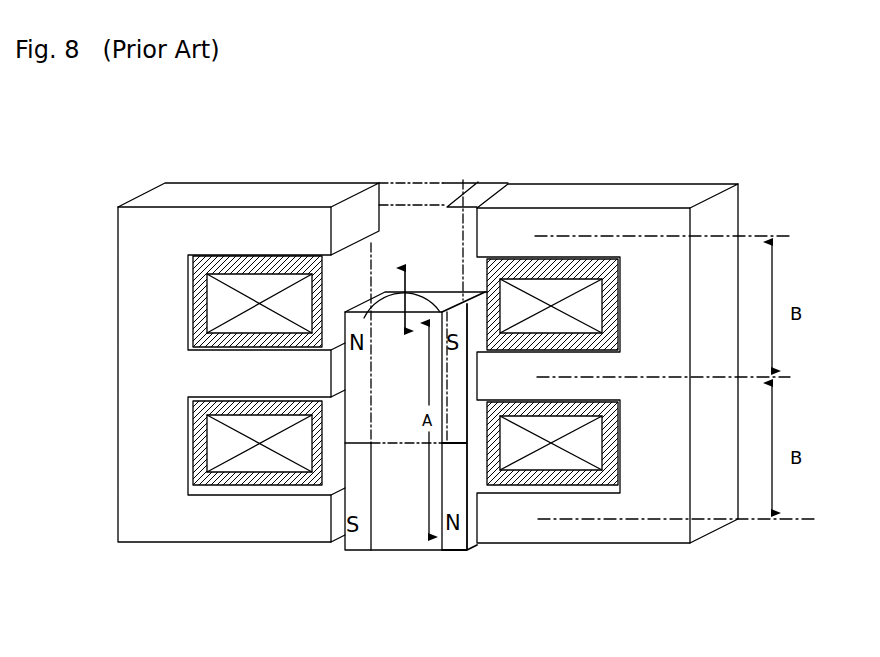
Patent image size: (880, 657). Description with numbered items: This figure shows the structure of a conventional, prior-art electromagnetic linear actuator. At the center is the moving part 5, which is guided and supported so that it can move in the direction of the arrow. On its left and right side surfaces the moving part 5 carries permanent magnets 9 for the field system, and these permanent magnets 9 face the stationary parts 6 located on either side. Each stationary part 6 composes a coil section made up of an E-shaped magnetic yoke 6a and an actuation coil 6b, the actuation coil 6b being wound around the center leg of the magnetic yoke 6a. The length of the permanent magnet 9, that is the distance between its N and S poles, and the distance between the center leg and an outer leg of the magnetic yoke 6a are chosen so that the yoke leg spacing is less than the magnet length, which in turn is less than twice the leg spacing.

The stationary part 6 is at (399, 330).
The E-shaped magnetic yoke 6a is at (153, 254).
The actuation coil 6b is at (223, 308).
The permanent magnet 9 is at (448, 296).
The moving part 5 is at (416, 370).